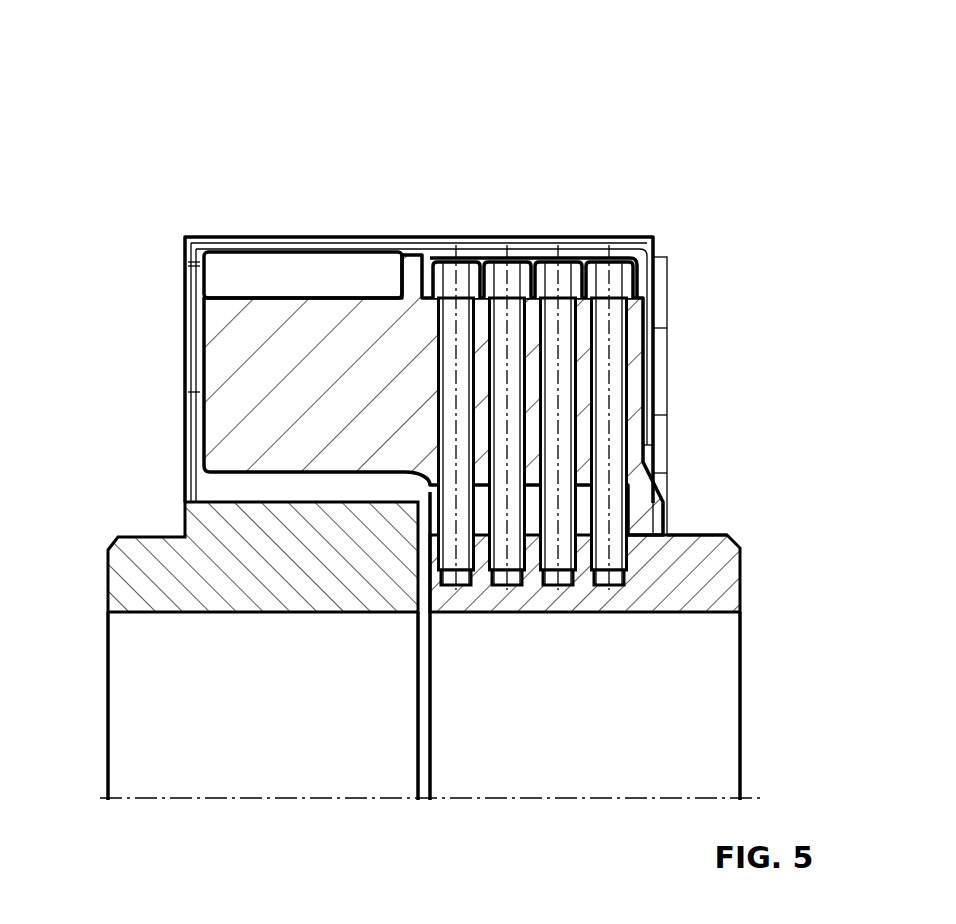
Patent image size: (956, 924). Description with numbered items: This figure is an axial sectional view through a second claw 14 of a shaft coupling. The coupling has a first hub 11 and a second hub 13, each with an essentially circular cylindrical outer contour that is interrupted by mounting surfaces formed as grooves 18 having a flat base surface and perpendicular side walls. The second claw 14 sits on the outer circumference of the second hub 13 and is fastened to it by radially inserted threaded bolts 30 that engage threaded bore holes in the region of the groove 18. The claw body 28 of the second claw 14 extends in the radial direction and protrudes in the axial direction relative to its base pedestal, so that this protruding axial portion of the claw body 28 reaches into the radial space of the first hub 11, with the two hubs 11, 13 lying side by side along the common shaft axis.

The first hub 11 is at (93, 577).
The second hub 13 is at (754, 590).
The second claw 14 is at (304, 224).
The groove 18 is at (704, 533).
The claw body 28 is at (252, 373).
The threaded bolts 30 is at (497, 272).